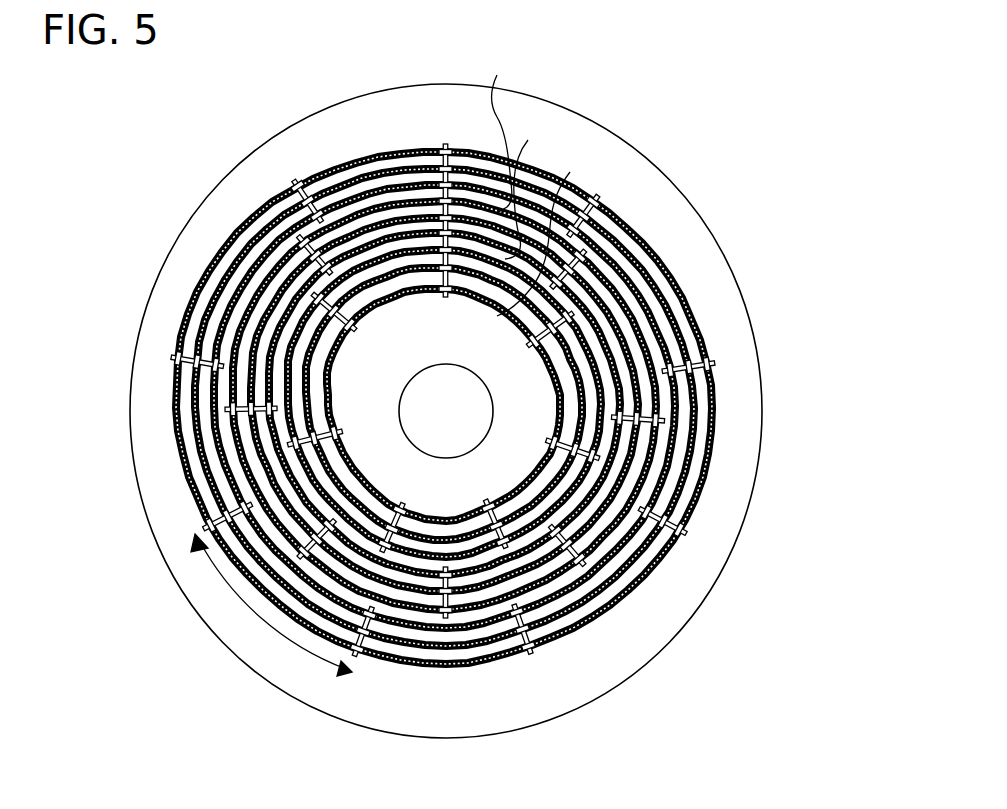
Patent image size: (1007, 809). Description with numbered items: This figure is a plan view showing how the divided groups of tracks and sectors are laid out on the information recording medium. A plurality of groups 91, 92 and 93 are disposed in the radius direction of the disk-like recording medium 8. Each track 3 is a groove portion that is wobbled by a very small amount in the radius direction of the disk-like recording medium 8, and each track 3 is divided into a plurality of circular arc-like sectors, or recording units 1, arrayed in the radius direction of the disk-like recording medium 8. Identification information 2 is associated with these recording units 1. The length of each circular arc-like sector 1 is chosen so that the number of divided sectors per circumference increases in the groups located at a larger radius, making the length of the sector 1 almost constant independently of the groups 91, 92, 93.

The recording unit 1 is at (291, 643).
The identification information 2 is at (298, 197).
The groove portion 3 is at (190, 486).
The disk-like recording medium 8 is at (682, 622).
The groove 91 is at (503, 127).
The groove 92 is at (538, 185).
The groove 93 is at (555, 228).